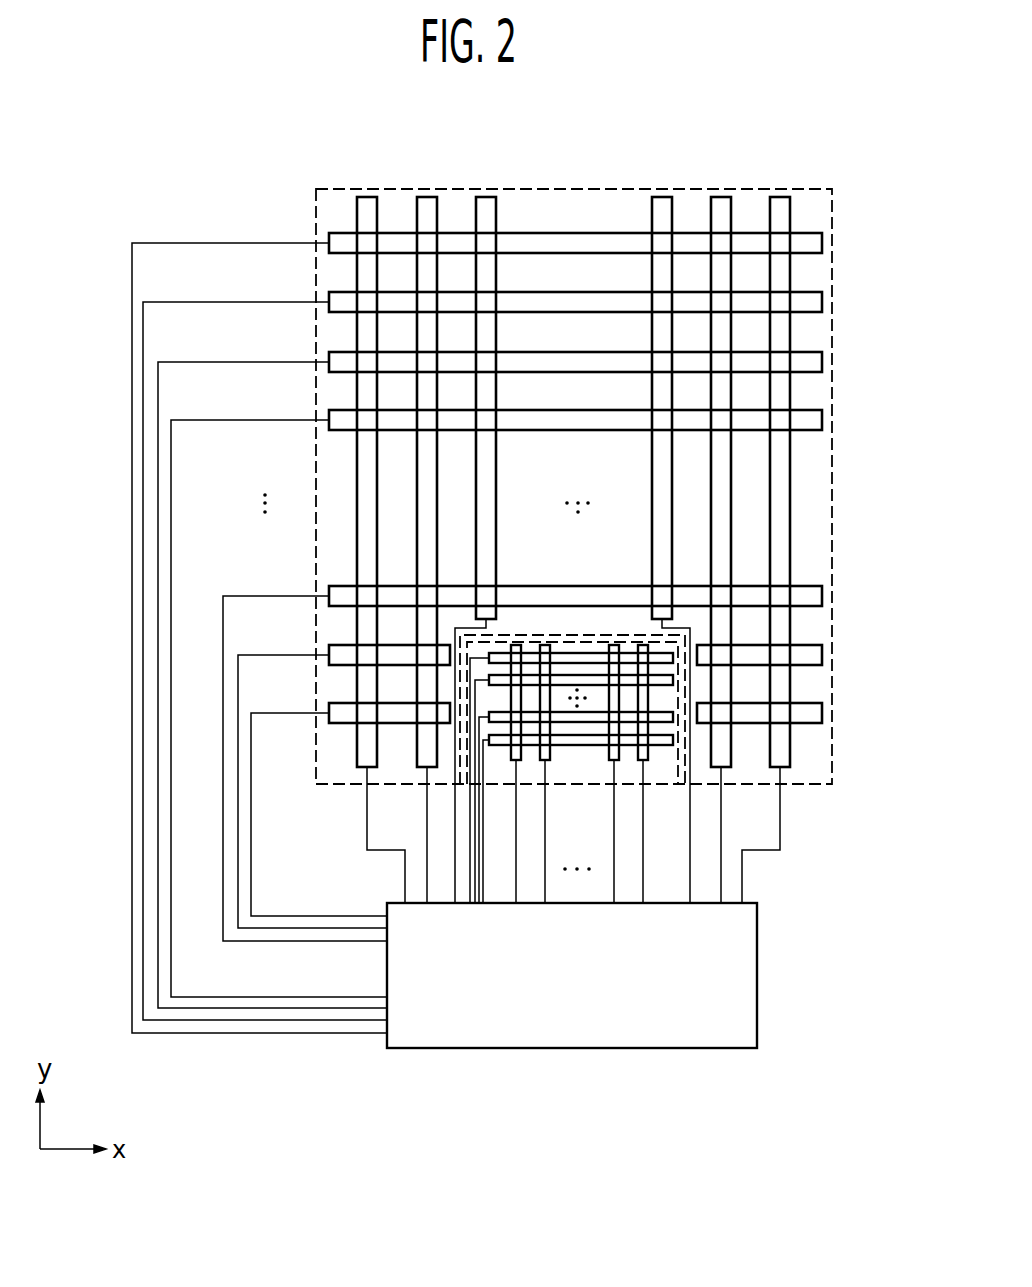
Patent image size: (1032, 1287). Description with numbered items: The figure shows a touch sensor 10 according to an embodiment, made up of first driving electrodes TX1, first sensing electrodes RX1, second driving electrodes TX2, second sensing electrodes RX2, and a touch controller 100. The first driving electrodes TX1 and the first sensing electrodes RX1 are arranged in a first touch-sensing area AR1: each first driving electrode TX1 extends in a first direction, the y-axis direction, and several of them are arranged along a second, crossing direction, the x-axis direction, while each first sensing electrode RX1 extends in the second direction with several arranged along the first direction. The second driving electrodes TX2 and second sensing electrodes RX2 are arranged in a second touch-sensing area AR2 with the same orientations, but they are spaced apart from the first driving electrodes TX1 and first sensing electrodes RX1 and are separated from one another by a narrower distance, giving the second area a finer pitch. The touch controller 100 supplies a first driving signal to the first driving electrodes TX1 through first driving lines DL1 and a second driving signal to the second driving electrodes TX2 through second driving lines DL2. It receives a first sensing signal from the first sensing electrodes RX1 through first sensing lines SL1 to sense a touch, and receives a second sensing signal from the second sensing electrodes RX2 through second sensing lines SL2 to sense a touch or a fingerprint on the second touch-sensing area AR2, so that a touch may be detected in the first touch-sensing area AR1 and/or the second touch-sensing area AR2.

The touch sensor 10 is at (612, 130).
The first driving electrodes TX1 is at (779, 197).
The first sensing electrodes RX1 is at (822, 243).
The first touch-sensing area AR1 is at (832, 192).
The first driving lines DL1 is at (132, 462).
The first sensing lines SL1 is at (780, 830).
The second touch-sensing area AR2 is at (652, 784).
The second driving electrodes TX2 is at (545, 760).
The second sensing electrodes RX2 is at (500, 740).
The second driving lines DL2 is at (482, 800).
The second sensing lines SL2 is at (543, 868).
The touch controller 100 is at (757, 968).